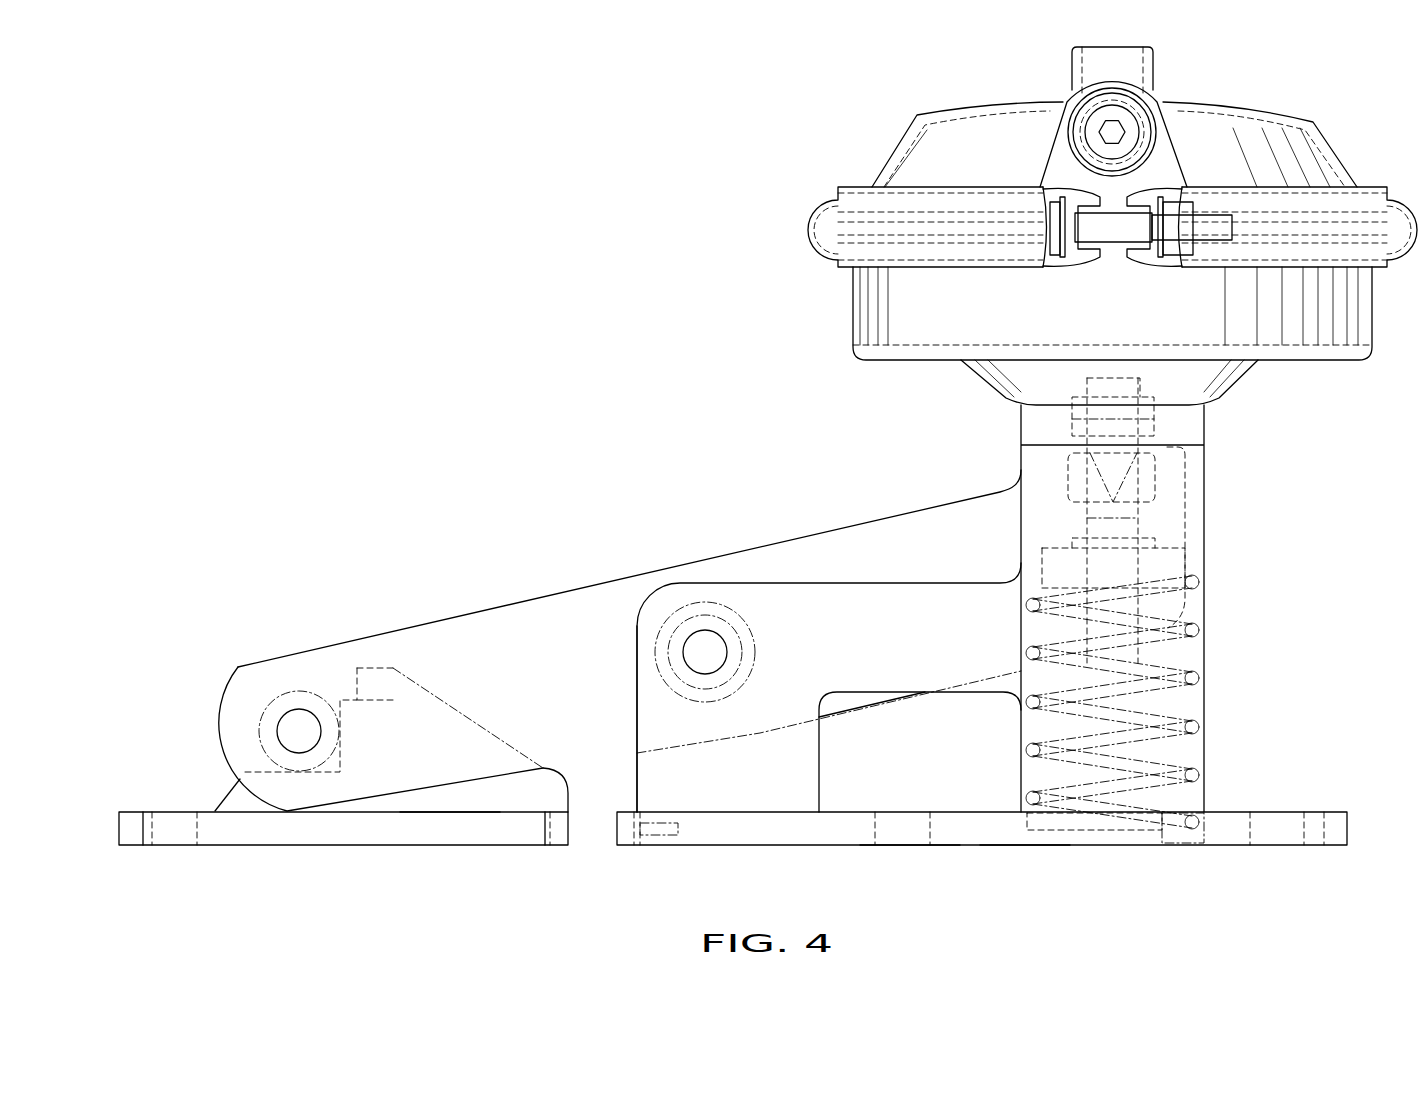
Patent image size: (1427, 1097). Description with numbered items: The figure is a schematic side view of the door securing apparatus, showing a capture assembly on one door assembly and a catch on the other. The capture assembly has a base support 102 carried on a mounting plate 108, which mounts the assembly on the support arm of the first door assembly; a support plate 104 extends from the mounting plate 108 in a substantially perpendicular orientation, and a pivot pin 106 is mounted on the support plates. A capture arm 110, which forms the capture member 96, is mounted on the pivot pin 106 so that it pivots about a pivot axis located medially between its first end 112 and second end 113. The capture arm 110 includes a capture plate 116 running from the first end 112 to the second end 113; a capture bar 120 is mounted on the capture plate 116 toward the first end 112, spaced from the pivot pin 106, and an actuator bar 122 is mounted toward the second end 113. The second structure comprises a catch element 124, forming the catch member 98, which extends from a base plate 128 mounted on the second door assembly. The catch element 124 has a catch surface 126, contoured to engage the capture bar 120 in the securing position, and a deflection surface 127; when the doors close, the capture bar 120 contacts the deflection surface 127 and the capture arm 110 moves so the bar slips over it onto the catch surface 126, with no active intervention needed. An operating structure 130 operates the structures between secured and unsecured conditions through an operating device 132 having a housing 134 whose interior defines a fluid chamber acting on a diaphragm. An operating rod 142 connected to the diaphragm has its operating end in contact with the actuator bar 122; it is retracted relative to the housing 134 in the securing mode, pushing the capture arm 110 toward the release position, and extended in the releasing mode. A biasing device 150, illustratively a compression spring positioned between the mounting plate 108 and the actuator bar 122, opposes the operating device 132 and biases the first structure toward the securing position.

The capture member 96 is at (908, 858).
The catch member 98 is at (283, 851).
The base support 102 is at (1025, 858).
The support plate 104 is at (710, 768).
The pivot pin 106 is at (697, 630).
The mounting plate 108 is at (1322, 812).
The capture arm 110 is at (621, 558).
The first end 112 is at (250, 650).
The second end 113 is at (1192, 485).
The capture plate 116 is at (562, 590).
The capture bar 120 is at (285, 731).
The actuator bar 122 is at (1170, 567).
The catch element 124 is at (522, 795).
The catch surface 126 is at (357, 700).
The deflection surface 127 is at (445, 702).
The base plate 128 is at (443, 820).
The operating structure 130 is at (1240, 98).
The operating device 132 is at (838, 307).
The housing 134 is at (897, 152).
The operating rod 142 is at (1137, 528).
The biasing device 150 is at (1195, 725).